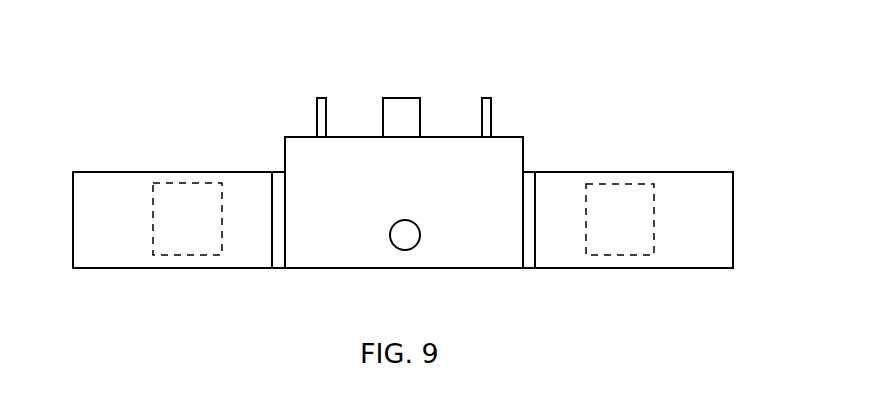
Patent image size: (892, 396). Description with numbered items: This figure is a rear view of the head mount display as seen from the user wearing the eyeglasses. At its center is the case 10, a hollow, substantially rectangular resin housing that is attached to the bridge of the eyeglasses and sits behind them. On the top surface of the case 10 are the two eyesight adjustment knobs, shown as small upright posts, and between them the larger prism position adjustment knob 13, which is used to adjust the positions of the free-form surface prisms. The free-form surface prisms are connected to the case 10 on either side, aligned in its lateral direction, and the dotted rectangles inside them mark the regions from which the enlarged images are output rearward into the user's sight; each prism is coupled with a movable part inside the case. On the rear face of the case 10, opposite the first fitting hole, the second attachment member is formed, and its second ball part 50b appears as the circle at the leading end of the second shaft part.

The case 10 is at (340, 269).
The prism position adjustment knob 13 is at (403, 97).
The second ball part 50b is at (408, 250).